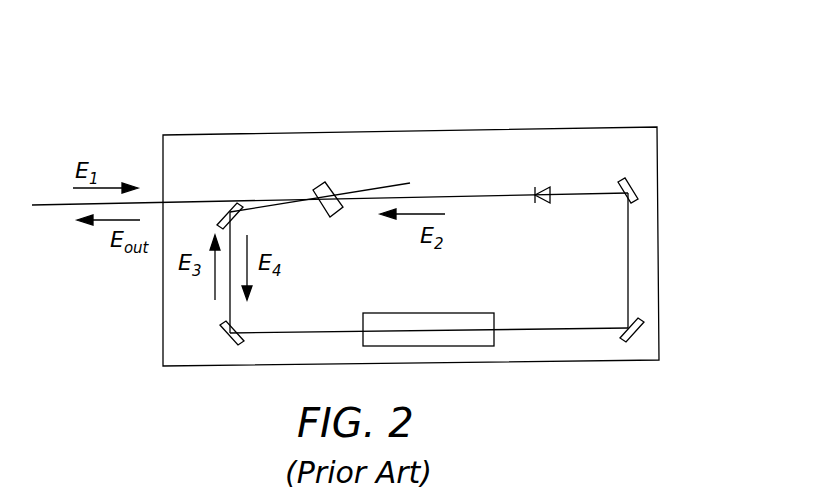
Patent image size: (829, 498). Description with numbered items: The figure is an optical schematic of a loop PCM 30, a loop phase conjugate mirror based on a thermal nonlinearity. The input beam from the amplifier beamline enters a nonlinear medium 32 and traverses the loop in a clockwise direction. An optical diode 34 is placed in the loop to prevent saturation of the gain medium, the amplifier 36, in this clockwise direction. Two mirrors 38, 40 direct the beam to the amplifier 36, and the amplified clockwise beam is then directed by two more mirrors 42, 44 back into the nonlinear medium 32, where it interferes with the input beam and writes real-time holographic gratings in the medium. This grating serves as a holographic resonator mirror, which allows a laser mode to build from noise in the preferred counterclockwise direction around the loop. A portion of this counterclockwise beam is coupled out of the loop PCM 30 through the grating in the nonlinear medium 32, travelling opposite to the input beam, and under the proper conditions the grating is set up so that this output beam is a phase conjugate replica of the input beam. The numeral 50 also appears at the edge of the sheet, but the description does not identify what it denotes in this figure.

The loop PCM 30 is at (646, 89).
The nonlinear medium 32 is at (335, 192).
The optical diode 34 is at (538, 189).
The amplifier 36 is at (474, 344).
The mirror 38 is at (635, 191).
The mirror 40 is at (633, 333).
The mirror 42 is at (228, 340).
The mirror 44 is at (224, 212).
The system (next figure) 50 is at (660, 497).